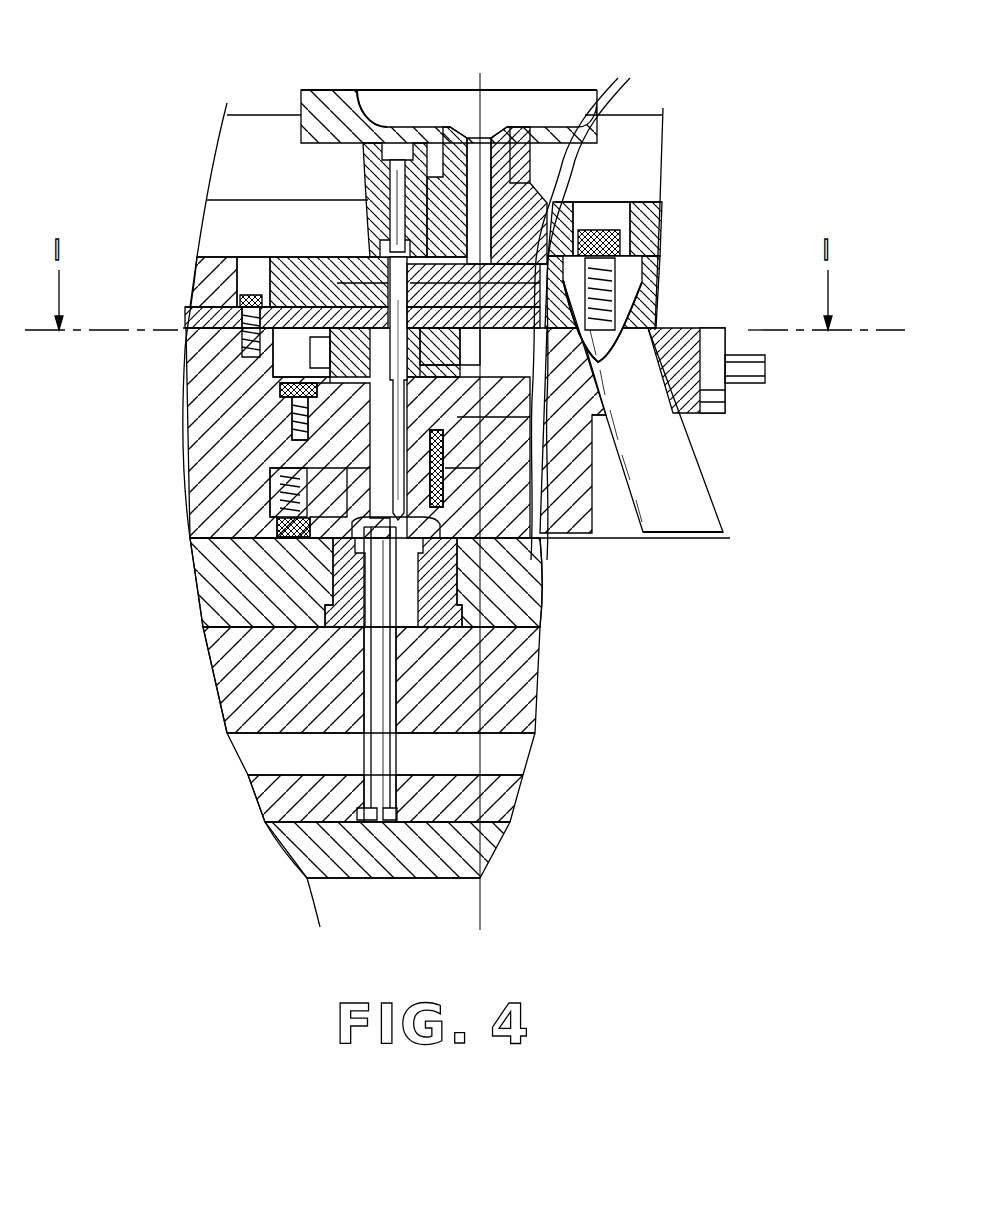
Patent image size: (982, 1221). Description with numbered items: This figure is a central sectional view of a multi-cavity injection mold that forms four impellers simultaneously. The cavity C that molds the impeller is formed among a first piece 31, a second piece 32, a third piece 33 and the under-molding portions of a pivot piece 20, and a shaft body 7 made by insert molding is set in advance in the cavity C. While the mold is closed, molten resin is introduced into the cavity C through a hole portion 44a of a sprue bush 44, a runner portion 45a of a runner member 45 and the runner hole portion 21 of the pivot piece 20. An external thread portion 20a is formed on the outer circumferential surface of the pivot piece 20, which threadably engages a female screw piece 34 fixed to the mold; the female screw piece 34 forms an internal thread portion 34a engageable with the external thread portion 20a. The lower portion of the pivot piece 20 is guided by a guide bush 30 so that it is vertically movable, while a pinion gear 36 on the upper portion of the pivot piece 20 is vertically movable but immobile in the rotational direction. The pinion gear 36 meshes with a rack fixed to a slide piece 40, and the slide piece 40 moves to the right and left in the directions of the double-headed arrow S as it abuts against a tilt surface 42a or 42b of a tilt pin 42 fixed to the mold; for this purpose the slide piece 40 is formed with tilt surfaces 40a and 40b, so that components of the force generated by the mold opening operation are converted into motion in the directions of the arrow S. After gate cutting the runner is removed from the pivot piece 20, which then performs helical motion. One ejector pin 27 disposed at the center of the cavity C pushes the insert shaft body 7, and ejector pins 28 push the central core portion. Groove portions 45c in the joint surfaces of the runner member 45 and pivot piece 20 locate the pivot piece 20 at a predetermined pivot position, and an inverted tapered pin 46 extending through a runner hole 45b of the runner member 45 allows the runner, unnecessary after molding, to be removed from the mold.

The shaft body 7 is at (440, 625).
The pivot piece 20 is at (265, 565).
The external thread portion 20a is at (540, 545).
The runner hole portion 21 is at (320, 355).
The ejector pin 27 is at (395, 760).
The ejector pins 28 is at (367, 703).
The guide bush 30 is at (285, 498).
The first piece 31 is at (440, 660).
The second piece 32 is at (240, 640).
The third piece 33 is at (330, 602).
The female screw piece 34 is at (350, 390).
The internal thread portion 34a is at (290, 392).
The pinion gear 36 is at (240, 322).
The slide piece 40 is at (705, 342).
The tilt surface 40a is at (687, 413).
The tilt surface 40b is at (590, 393).
The tilt pin 42 is at (680, 483).
The tilt surface 42a is at (678, 345).
The tilt surface 42b is at (608, 405).
The sprue bush 44 is at (438, 152).
The hole portion 44a is at (493, 127).
The runner member 45 is at (393, 265).
The runner portion 45a is at (380, 122).
The runner hole 45b is at (400, 300).
The groove portions 45c is at (372, 345).
The inverted tapered pin 46 is at (392, 190).
The cavity C is at (483, 572).
The double-headed arrow S is at (510, 373).